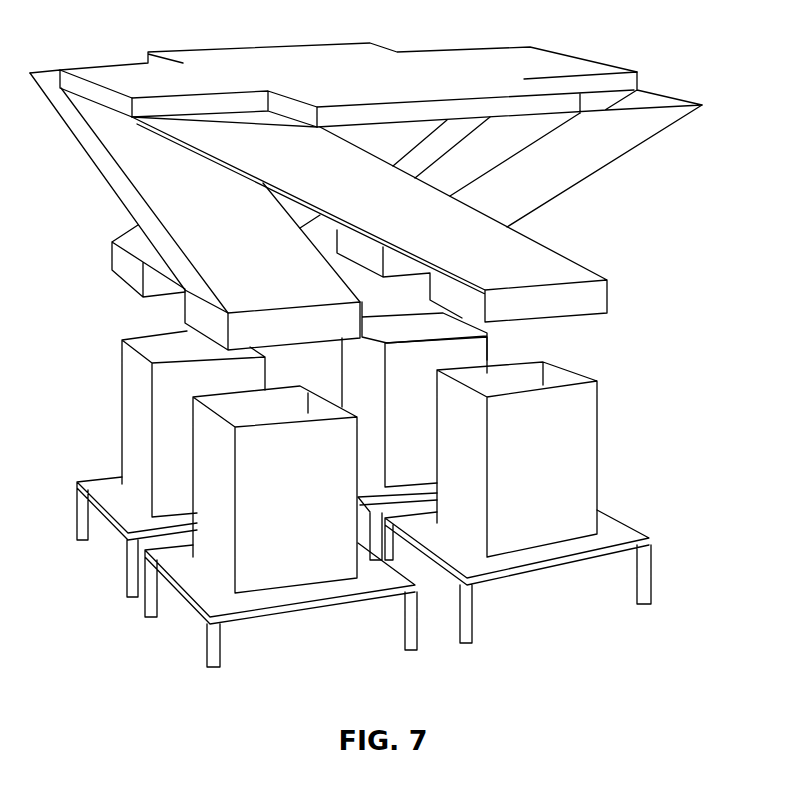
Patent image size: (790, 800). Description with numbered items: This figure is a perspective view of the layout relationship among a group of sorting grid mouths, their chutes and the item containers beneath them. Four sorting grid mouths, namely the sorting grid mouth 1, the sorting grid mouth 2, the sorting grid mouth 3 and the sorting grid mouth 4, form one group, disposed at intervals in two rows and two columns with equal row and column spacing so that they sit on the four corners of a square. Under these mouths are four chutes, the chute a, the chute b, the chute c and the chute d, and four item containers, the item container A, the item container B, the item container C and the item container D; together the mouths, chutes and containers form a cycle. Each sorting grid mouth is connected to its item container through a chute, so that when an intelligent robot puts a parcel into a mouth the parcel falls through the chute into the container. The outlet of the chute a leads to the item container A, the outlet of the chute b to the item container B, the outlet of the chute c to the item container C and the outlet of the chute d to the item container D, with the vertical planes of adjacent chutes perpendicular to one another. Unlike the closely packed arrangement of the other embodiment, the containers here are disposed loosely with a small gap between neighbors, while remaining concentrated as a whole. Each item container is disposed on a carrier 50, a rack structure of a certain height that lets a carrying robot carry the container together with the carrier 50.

The sorting grid mouth 1 is at (81, 77).
The sorting grid mouth 2 is at (224, 96).
The sorting grid mouth 3 is at (509, 96).
The sorting grid mouth 4 is at (348, 45).
The carrier 50 is at (623, 536).
The chute a is at (195, 211).
The chute b is at (369, 238).
The chute c is at (547, 166).
The chute d is at (136, 261).
The item container A is at (275, 489).
The item container B is at (517, 459).
The item container C is at (414, 412).
The item container D is at (193, 424).